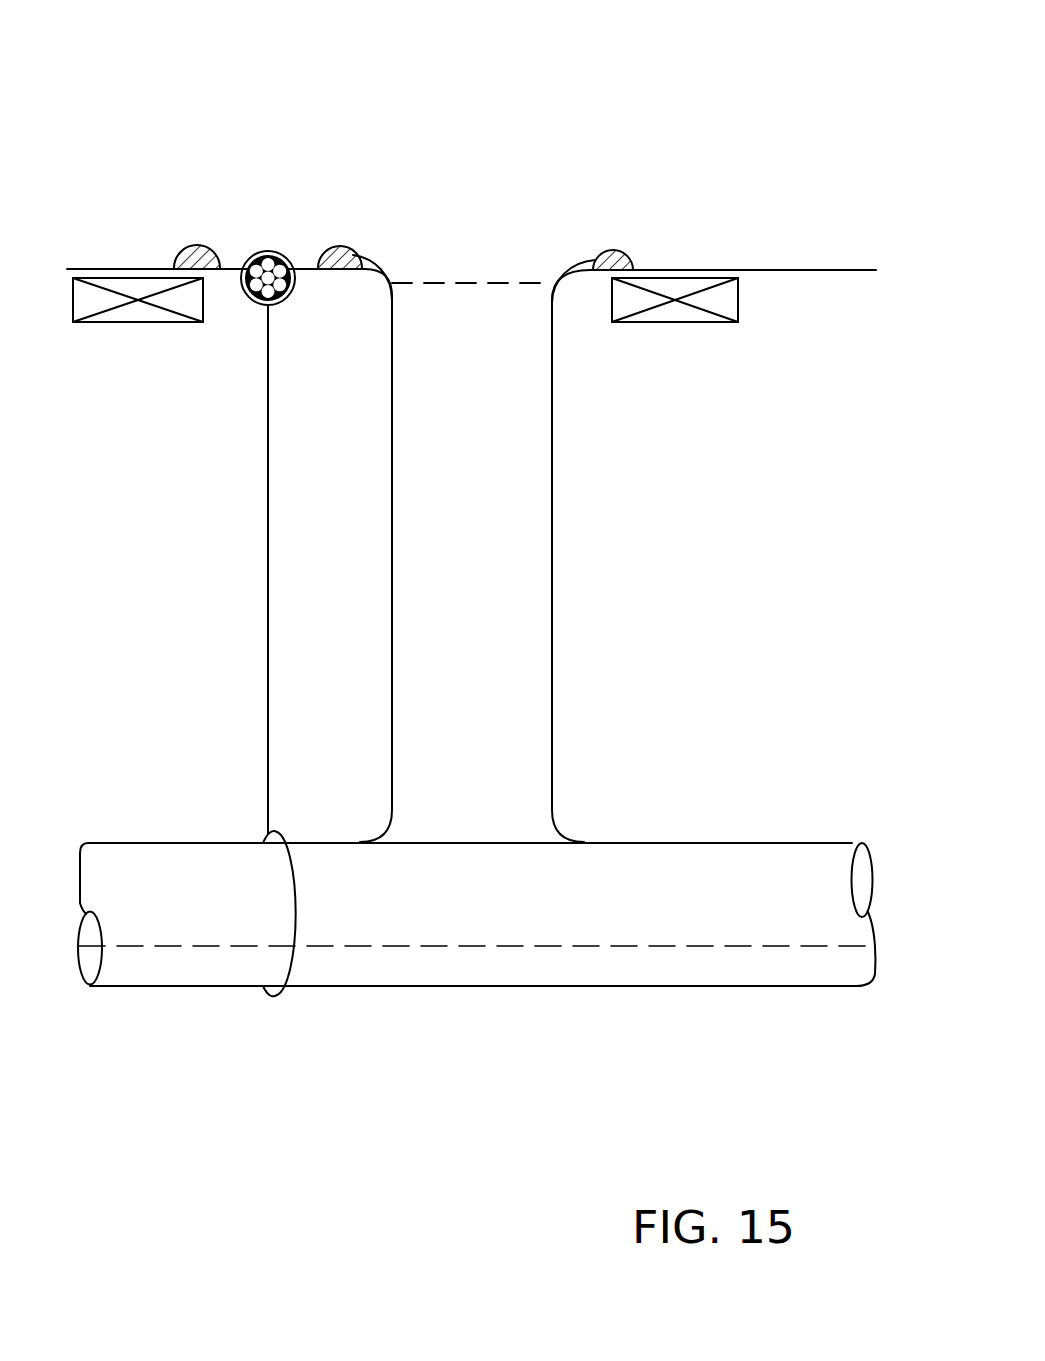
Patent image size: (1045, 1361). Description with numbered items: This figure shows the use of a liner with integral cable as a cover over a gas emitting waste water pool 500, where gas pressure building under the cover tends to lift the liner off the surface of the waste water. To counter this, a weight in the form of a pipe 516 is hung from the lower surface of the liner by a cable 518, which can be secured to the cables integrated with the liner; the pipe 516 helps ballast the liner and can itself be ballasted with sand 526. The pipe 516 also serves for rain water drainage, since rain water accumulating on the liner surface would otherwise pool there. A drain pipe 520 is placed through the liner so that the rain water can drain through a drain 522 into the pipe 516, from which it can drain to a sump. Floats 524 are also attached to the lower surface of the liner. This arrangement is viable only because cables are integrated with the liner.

The gas emitting waste water pool 500 is at (749, 138).
The pipe 516 is at (183, 862).
The cable 518 is at (268, 556).
The drain pipe 520 is at (522, 559).
The drain 522 is at (456, 300).
The floats 524 is at (157, 322).
The sand 526 is at (697, 948).